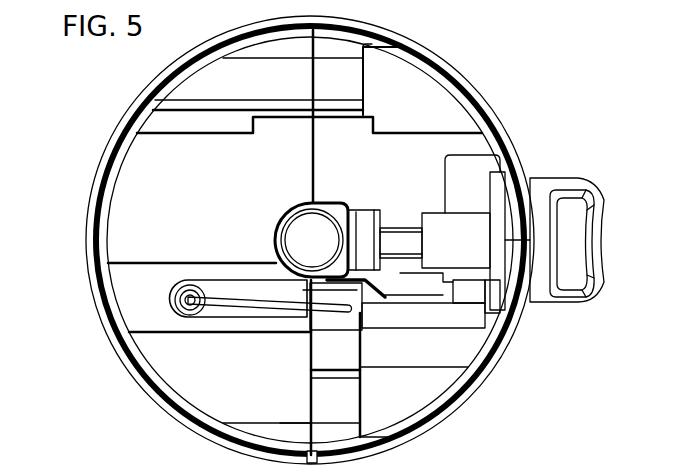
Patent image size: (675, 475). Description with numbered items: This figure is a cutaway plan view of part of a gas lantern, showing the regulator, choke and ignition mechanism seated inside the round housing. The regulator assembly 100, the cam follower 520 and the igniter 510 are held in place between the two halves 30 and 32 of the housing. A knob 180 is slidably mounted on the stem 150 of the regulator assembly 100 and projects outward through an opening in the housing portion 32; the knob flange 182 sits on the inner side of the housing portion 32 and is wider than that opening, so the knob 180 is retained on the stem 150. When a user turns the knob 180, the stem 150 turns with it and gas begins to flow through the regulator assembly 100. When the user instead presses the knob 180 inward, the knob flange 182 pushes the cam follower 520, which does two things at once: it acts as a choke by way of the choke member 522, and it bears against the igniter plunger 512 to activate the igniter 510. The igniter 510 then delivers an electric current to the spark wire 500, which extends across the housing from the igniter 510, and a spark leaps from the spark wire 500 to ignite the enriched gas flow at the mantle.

The housing half 30 is at (97, 275).
The housing portion 32 is at (500, 358).
The regulator assembly 100 is at (330, 203).
The stem 150 is at (404, 226).
The knob 180 is at (574, 212).
The knob flange 182 is at (523, 173).
The spark wire 500 is at (252, 280).
The igniter 510 is at (257, 318).
The igniter plunger 512 is at (357, 316).
The cam follower 520 is at (433, 320).
The choke member 522 is at (350, 283).